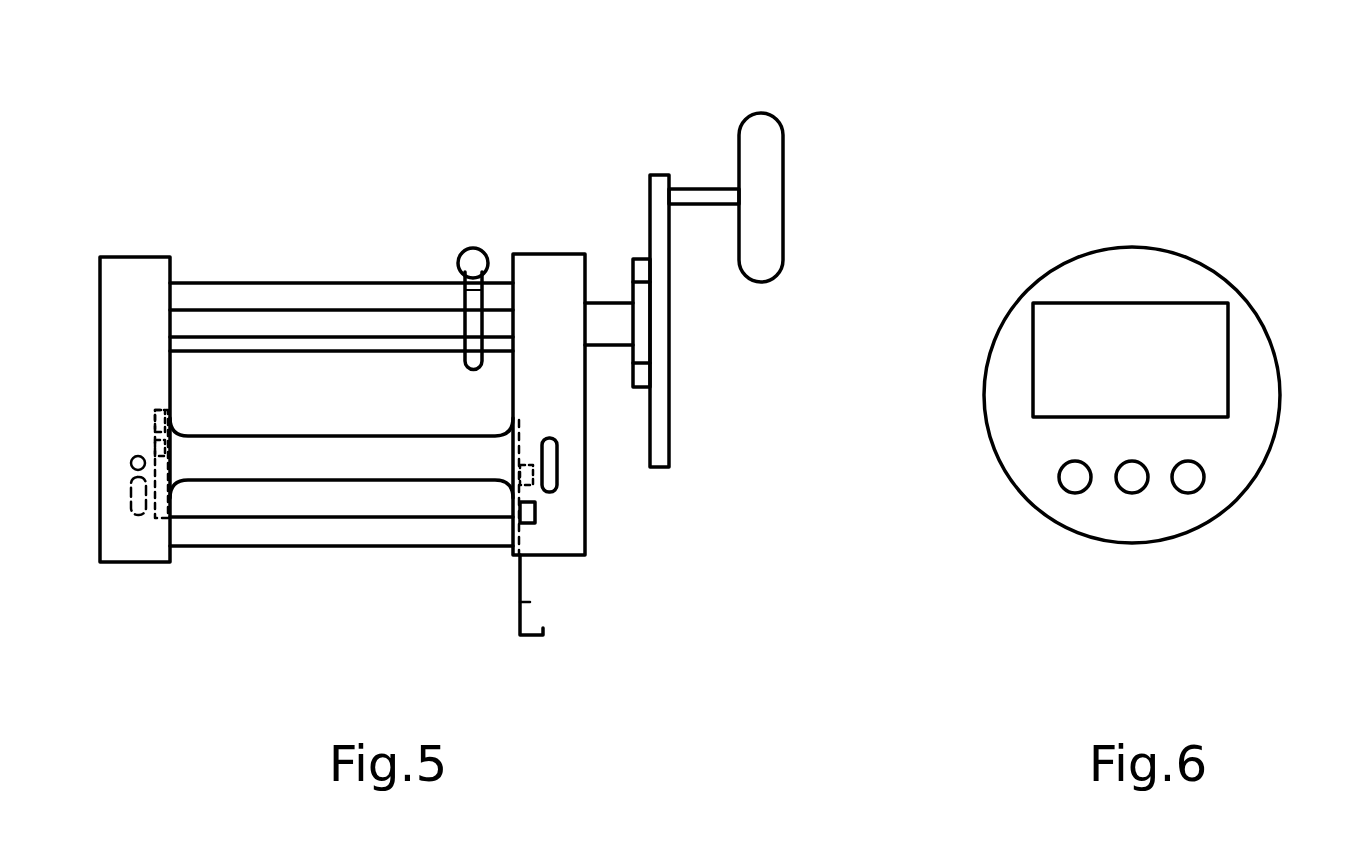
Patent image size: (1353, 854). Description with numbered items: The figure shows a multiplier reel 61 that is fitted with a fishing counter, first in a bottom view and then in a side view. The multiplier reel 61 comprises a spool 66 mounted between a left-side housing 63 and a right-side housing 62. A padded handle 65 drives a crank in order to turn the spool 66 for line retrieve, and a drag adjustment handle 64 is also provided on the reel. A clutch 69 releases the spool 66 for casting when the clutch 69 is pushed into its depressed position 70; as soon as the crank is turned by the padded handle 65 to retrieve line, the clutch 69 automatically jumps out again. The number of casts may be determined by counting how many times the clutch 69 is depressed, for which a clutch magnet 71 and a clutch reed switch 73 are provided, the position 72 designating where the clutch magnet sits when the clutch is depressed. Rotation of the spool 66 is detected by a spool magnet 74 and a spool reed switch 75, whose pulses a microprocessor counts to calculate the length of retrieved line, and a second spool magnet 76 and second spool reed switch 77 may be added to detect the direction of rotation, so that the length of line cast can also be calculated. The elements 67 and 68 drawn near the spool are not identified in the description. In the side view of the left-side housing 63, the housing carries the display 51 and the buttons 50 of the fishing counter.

In FIG. 5, the multiplier reel 61 is at (850, 103).
In FIG. 5, the right-side housing 62 is at (532, 262).
In FIG. 5, the left-side housing 63 is at (130, 257).
In FIG. 6, the left-side housing 63 is at (1262, 437).
In FIG. 5, the drag adjustment handle 64 is at (645, 318).
In FIG. 5, the padded handle 65 is at (778, 188).
In FIG. 5, the spool 66 is at (345, 470).
In FIG. 5, the locking pin 67 is at (473, 248).
In FIG. 5, the bore 68 is at (472, 295).
In FIG. 5, the clutch 69 is at (532, 640).
In FIG. 5, the depressed position 70 is at (535, 602).
In FIG. 5, the clutch magnet 71 is at (536, 512).
In FIG. 5, the position of the clutch magnet when the clutch is depressed 72 is at (534, 482).
In FIG. 5, the clutch reed switch 73 is at (560, 450).
In FIG. 5, the spool magnet 74 is at (155, 418).
In FIG. 5, the spool reed switch 75 is at (141, 520).
In FIG. 5, the second spool magnet 76 is at (155, 452).
In FIG. 5, the second spool reed switch 77 is at (131, 463).
In FIG. 6, the buttons 50 is at (1075, 493).
In FIG. 6, the display 51 is at (1175, 315).